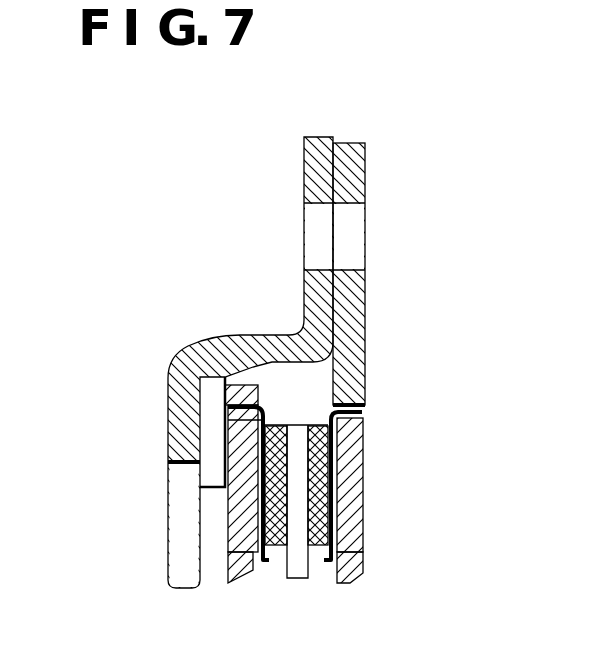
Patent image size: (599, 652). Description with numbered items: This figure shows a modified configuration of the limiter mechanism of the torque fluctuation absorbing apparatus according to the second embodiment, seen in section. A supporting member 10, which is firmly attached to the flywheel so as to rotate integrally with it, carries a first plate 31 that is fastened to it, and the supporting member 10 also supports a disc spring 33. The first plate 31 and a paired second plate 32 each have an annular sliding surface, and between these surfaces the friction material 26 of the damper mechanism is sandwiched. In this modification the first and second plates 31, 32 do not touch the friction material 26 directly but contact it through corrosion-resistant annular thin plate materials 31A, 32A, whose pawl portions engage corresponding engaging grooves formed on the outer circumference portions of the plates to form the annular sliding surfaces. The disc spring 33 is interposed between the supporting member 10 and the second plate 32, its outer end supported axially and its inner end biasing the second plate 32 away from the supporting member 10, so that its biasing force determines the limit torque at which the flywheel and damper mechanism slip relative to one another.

The supporting member 10 is at (313, 175).
The friction material 26 is at (327, 503).
The first plate 31 is at (352, 164).
The annular thin plate material 31A is at (366, 405).
The second plate 32 is at (256, 566).
The annular thin plate material 32A is at (262, 418).
The disc spring 33 is at (232, 405).